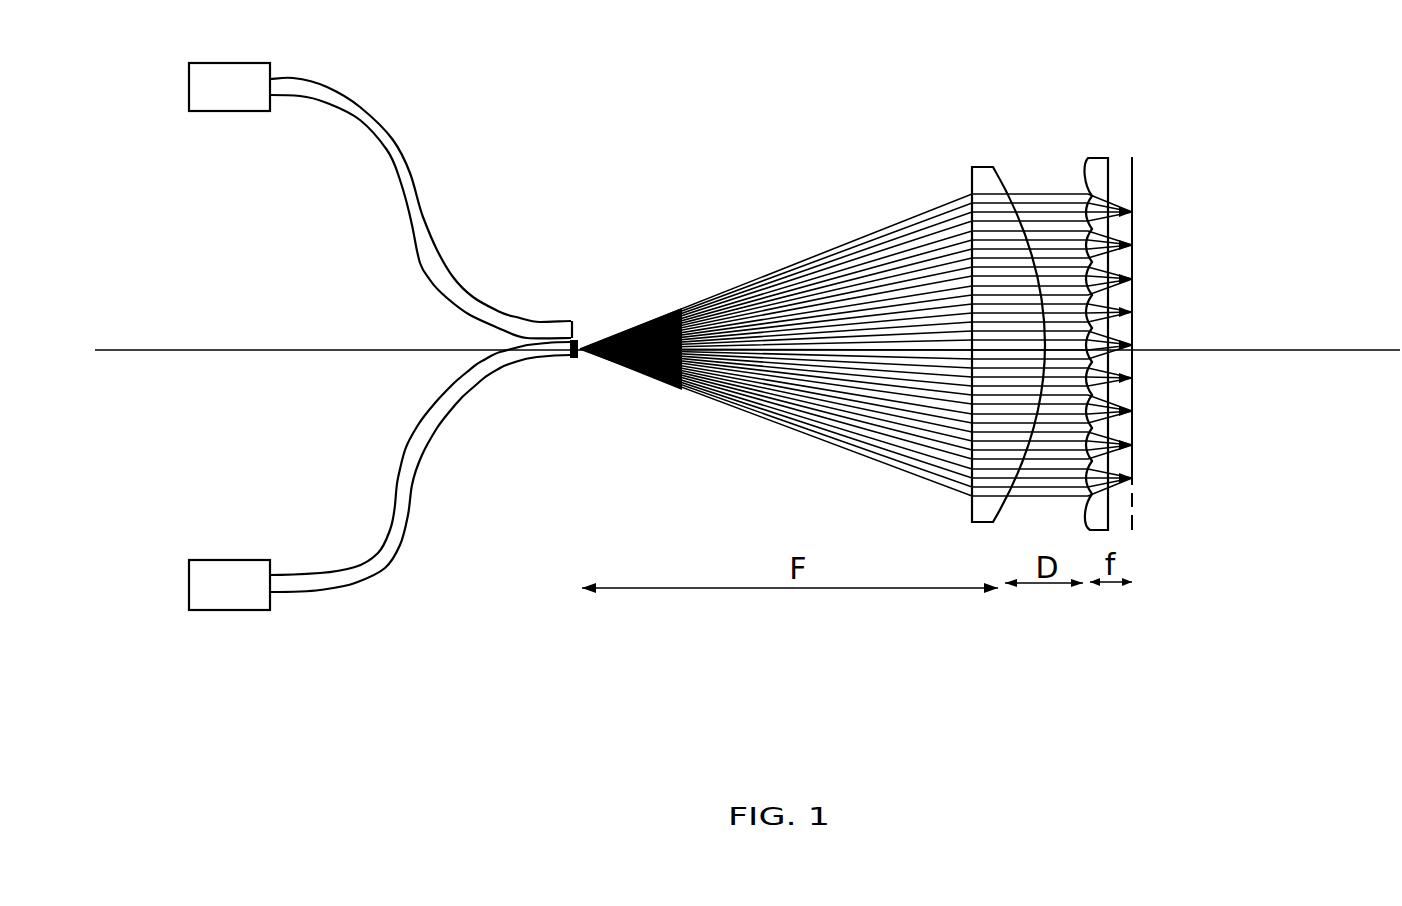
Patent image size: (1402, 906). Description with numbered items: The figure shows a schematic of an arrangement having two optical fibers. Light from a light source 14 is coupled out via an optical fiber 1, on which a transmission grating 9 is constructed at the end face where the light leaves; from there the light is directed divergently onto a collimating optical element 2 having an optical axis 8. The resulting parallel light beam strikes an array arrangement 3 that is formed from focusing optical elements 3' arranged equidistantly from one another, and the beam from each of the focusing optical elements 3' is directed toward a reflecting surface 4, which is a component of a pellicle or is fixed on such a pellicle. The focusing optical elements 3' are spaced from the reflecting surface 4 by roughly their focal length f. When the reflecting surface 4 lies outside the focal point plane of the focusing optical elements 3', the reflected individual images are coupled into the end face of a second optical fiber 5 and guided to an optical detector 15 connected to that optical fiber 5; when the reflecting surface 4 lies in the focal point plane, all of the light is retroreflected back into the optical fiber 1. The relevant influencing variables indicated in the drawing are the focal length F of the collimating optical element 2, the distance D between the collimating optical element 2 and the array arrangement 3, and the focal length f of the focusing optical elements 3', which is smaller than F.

The optical fiber 1 is at (404, 482).
The collimating optical element 2 is at (985, 180).
The array arrangement 3 is at (1020, 287).
The focusing optical elements 3' is at (1170, 341).
The reflecting surface 4 is at (1150, 172).
The optical fiber 5 is at (412, 167).
The optical axis 8 is at (248, 342).
The transmission grating 9 is at (580, 374).
The light source 14 is at (228, 618).
The optical detector 15 is at (228, 118).